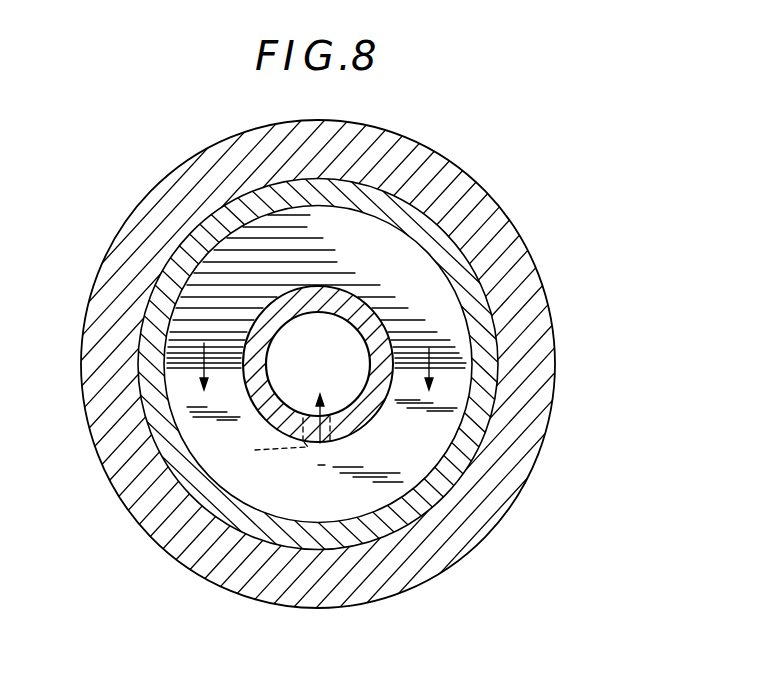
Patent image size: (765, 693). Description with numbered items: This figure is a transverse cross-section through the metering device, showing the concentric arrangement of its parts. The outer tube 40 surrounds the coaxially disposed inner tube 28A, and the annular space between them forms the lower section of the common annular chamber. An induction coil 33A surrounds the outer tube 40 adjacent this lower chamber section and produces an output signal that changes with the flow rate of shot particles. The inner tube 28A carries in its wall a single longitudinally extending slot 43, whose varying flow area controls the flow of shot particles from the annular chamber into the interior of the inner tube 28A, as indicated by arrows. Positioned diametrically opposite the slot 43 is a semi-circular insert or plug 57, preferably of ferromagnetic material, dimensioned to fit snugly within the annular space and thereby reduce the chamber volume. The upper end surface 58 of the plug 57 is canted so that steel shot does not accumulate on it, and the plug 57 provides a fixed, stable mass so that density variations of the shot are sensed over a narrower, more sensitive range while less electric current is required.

The induction coil 33A is at (521, 254).
The outer tube 40 is at (470, 447).
The inner tube 28A is at (377, 351).
The slot 43 is at (302, 456).
The semi-circular insert or plug 57 is at (445, 370).
The upper end surface 58 is at (405, 275).